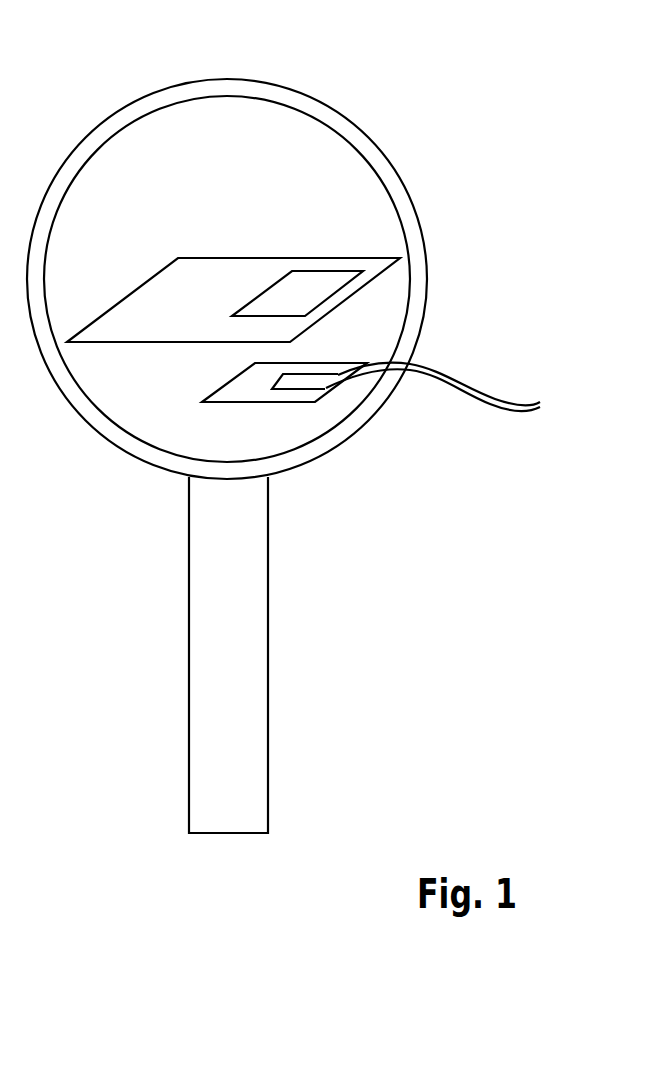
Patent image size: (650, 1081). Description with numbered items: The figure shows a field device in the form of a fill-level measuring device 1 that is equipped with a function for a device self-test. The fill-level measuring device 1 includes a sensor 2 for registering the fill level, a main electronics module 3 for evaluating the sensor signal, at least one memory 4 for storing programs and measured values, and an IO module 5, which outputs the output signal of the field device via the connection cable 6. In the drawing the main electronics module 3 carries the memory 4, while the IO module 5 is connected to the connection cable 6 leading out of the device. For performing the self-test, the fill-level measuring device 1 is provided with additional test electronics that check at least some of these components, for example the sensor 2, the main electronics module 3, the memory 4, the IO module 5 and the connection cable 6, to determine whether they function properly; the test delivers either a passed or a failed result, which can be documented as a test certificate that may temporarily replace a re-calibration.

The fill-level measuring device 1 is at (97, 107).
The sensor 2 is at (255, 558).
The main electronics module 3 is at (215, 272).
The memory 4 is at (302, 291).
The IO module 5 is at (249, 393).
The connection cable 6 is at (473, 387).